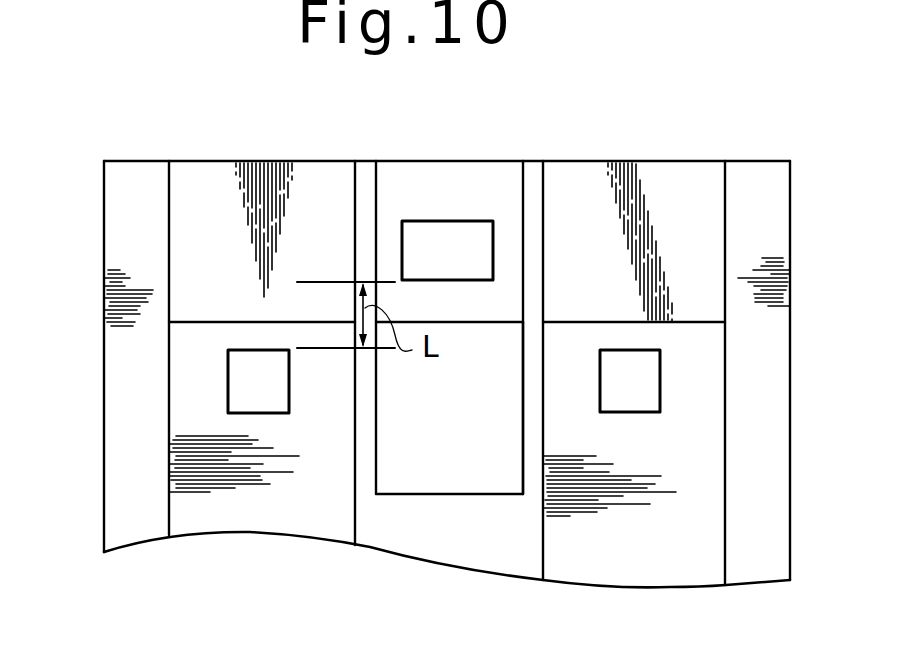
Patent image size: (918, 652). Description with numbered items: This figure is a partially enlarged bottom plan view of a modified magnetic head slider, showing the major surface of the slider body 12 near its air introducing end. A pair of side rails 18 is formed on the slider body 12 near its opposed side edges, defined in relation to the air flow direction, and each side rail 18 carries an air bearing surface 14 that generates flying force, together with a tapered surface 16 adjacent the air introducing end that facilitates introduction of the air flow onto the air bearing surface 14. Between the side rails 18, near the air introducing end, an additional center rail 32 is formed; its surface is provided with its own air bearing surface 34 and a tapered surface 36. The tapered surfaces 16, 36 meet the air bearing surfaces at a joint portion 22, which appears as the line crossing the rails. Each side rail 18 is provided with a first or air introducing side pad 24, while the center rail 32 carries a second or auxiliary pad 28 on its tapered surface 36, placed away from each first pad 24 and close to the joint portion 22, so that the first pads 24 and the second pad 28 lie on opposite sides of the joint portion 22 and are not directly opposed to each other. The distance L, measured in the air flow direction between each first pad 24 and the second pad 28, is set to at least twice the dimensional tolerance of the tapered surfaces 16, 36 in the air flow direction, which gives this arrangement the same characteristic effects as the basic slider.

The slider body 12 is at (104, 255).
The air bearing surface 14 is at (202, 502).
The tapered surface 16 is at (202, 192).
The side rail 18 is at (169, 445).
The joint portion 22 is at (208, 324).
The first pad 24 is at (237, 393).
The second pad 28 is at (430, 236).
The center rail 32 is at (438, 494).
The air bearing surface of center rail 34 is at (495, 477).
The tapered surface of center rail 36 is at (502, 178).